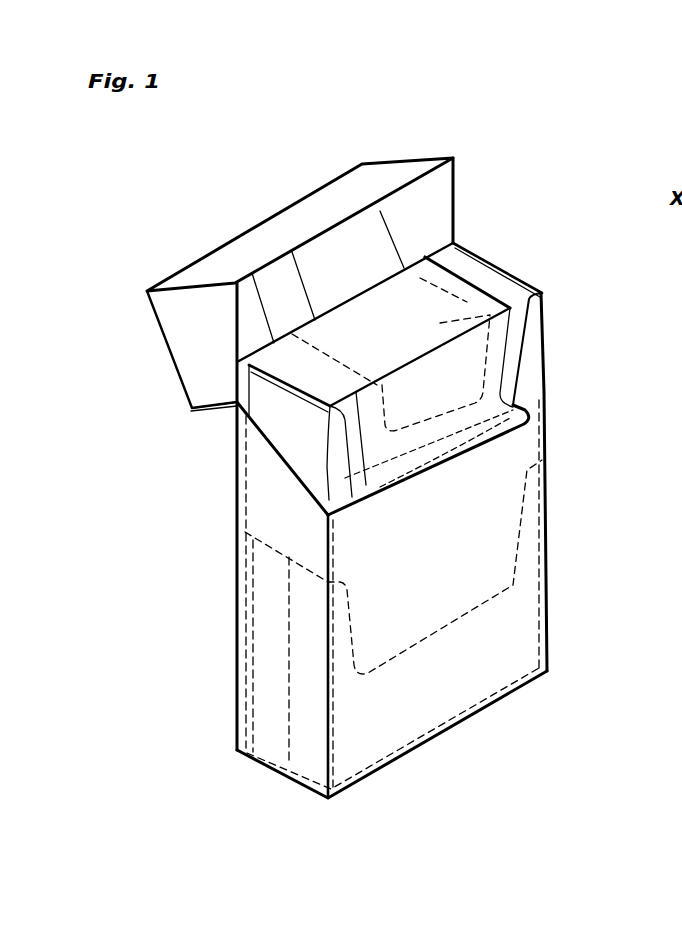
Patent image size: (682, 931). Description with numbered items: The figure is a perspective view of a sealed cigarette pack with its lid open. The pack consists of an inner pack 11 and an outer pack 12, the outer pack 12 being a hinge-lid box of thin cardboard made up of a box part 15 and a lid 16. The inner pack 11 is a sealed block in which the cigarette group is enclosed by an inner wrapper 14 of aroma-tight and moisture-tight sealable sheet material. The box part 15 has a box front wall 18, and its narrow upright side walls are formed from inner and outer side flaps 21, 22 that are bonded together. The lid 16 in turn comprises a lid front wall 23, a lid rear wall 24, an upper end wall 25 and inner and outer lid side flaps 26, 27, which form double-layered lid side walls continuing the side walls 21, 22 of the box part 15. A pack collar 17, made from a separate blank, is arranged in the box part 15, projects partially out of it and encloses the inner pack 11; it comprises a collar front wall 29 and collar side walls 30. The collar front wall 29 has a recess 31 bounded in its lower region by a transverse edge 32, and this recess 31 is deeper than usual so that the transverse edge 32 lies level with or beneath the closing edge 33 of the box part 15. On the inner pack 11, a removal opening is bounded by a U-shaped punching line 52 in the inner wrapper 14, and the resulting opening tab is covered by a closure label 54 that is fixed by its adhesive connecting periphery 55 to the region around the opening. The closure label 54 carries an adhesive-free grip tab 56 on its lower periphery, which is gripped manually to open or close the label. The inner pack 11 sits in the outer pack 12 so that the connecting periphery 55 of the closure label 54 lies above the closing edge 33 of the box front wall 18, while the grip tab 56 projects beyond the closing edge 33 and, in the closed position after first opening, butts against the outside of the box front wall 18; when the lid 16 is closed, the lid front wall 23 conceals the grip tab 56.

The inner pack 11 is at (498, 257).
The outer pack 12 is at (402, 562).
The inner wrapper 14 is at (315, 380).
The box part 15 is at (237, 710).
The lid 16 is at (319, 268).
The pack collar 17 is at (597, 482).
The box front wall 18 is at (460, 596).
The inner side flap 21 is at (375, 755).
The outer side flap 22 is at (278, 733).
The lid front wall 23 is at (300, 223).
The upper end wall 25 is at (285, 293).
The lid rear wall 24 is at (220, 408).
The inner lid side flap 26 is at (319, 250).
The outer lid side flap 27 is at (193, 328).
The collar front wall 29 is at (524, 393).
The collar side walls 30 is at (313, 470).
The recess 31 is at (352, 540).
The transverse edge 32 is at (479, 447).
The closing edge 33 is at (532, 407).
The U-shaped punching line 52 is at (400, 490).
The closure label 54 is at (512, 275).
The connecting periphery 55 is at (493, 260).
The grip tab 56 is at (352, 452).